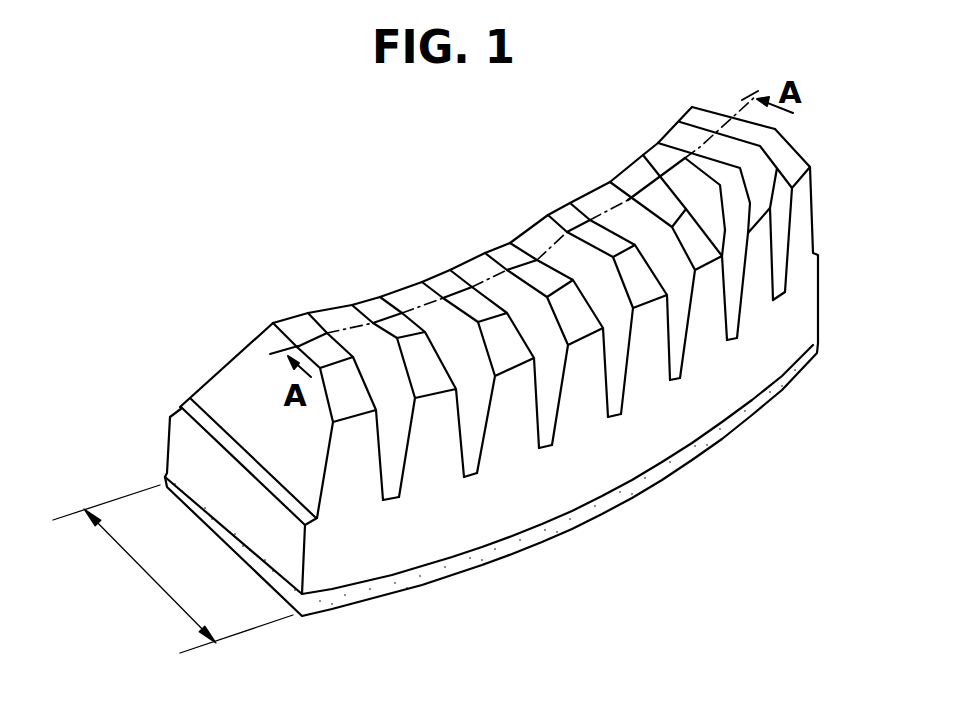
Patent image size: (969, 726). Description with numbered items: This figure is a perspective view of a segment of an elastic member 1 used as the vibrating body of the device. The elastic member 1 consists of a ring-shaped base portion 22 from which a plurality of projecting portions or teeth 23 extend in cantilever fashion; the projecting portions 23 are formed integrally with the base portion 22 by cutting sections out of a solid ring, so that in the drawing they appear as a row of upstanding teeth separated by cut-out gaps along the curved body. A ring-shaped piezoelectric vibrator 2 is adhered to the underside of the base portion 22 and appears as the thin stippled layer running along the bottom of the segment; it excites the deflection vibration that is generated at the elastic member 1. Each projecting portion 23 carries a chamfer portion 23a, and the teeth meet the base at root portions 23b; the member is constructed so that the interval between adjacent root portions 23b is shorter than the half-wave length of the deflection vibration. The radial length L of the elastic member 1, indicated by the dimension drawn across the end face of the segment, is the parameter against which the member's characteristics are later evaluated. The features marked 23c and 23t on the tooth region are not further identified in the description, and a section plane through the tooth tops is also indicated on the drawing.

The elastic member 1 is at (236, 336).
The piezoelectric vibrator 2 is at (780, 386).
The base portion 22 is at (803, 300).
The projecting portions 23 is at (292, 320).
The chamfer portion 23a is at (795, 150).
The root portions 23b is at (348, 515).
The center line of fin tops 23c is at (340, 322).
The top of fin 23t is at (707, 113).
The radial length L is at (173, 569).